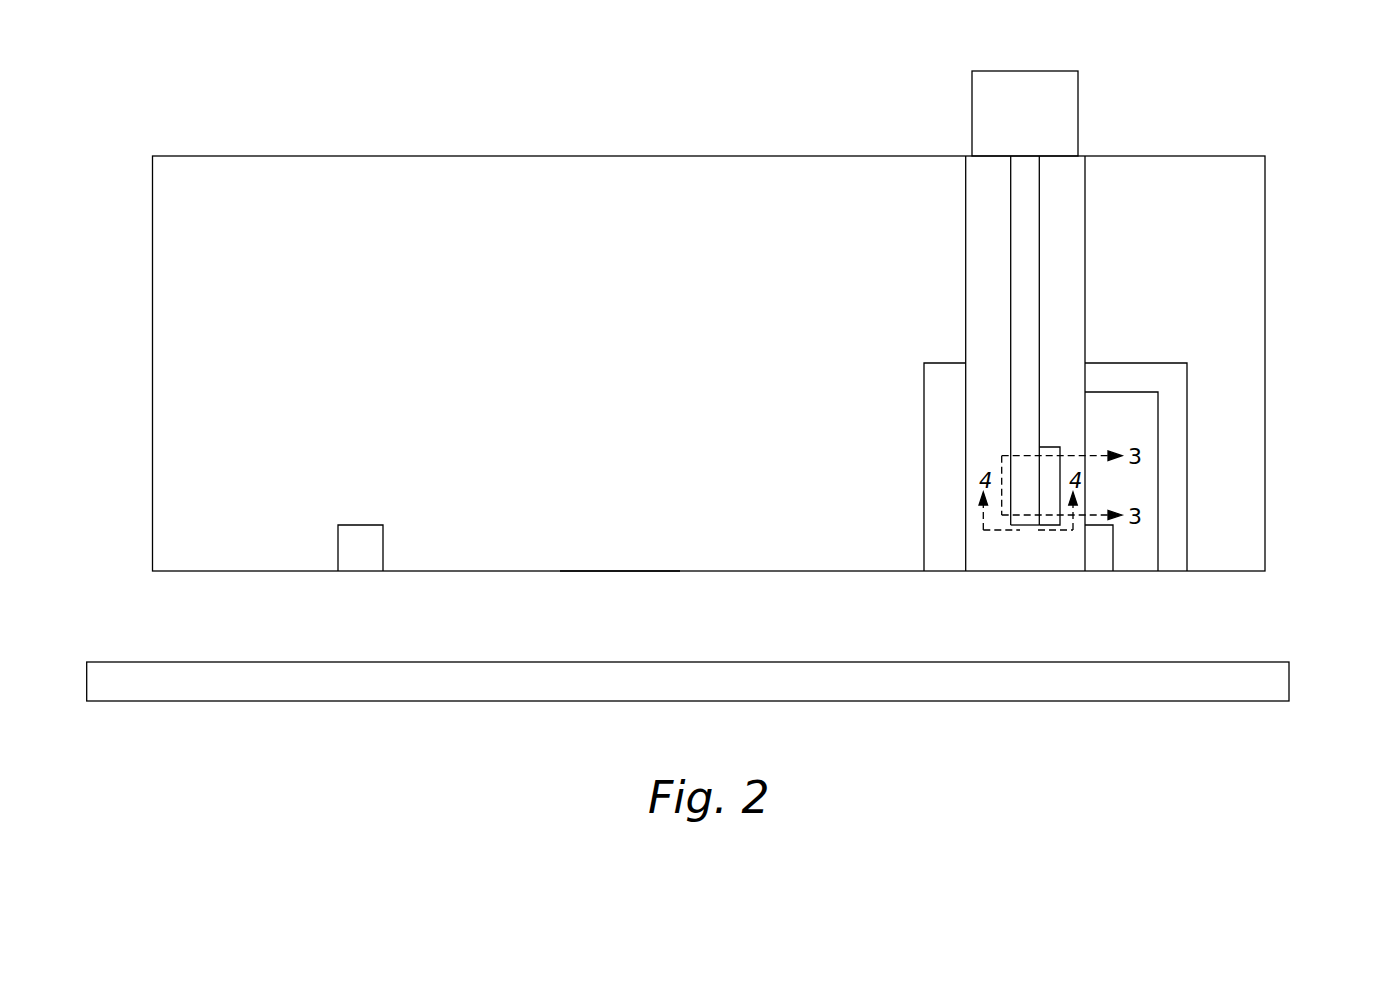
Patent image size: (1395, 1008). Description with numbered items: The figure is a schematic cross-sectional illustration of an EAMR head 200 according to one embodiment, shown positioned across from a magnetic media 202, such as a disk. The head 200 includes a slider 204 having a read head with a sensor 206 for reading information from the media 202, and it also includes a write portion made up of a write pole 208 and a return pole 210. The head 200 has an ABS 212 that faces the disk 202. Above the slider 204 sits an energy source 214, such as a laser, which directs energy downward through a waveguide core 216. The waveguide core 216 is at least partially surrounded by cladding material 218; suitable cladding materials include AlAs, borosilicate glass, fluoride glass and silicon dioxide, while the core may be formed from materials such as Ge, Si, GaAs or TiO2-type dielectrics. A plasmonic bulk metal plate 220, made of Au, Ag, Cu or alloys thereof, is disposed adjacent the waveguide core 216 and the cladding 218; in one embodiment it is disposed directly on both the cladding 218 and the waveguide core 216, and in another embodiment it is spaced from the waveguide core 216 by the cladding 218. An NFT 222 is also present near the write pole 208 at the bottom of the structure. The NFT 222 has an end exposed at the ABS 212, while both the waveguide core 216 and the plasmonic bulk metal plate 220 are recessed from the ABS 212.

The EAMR head 200 is at (190, 64).
The magnetic media 202 is at (1290, 677).
The slider 204 is at (635, 320).
The sensor 206 is at (359, 530).
The write pole 208 is at (1178, 495).
The return pole 210 is at (945, 565).
The ABS 212 is at (613, 574).
The energy source 214 is at (1070, 113).
The waveguide core 216 is at (1023, 235).
The cladding material 218 is at (1070, 233).
The plasmonic bulk metal plate 220 is at (1050, 527).
The NFT 222 is at (1099, 565).